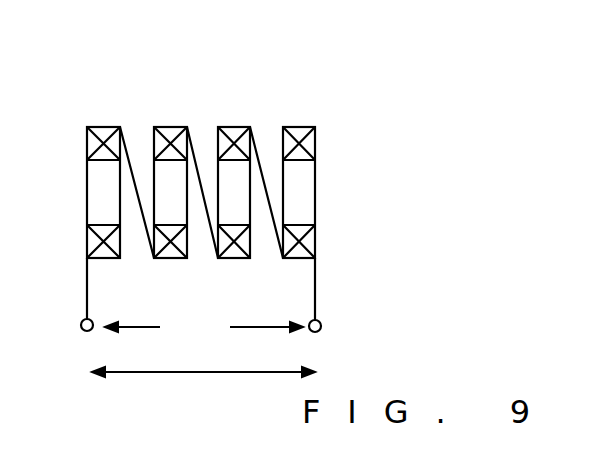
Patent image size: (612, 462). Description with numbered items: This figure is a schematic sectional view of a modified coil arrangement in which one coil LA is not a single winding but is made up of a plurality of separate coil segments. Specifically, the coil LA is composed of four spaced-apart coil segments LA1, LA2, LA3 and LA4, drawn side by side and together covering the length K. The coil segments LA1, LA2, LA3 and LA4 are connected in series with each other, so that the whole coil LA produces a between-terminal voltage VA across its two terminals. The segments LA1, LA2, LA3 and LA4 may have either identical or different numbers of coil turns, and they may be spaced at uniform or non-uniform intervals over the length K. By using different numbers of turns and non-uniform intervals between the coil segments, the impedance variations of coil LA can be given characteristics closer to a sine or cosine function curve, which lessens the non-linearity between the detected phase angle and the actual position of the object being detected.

The coil LA is at (348, 72).
The coil segment LA1 is at (107, 170).
The coil segment LA2 is at (170, 126).
The coil segment LA3 is at (236, 171).
The coil segment LA4 is at (305, 126).
The between-terminal voltage VA is at (204, 310).
The length K is at (203, 356).